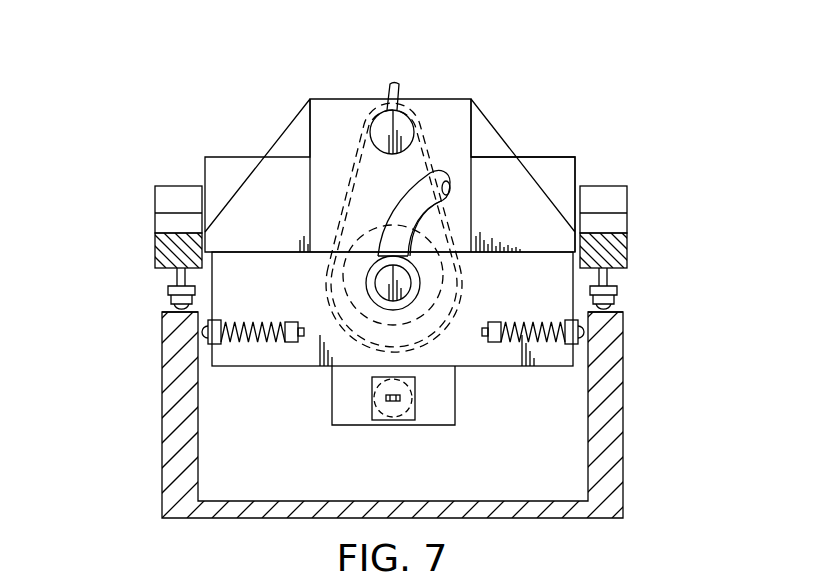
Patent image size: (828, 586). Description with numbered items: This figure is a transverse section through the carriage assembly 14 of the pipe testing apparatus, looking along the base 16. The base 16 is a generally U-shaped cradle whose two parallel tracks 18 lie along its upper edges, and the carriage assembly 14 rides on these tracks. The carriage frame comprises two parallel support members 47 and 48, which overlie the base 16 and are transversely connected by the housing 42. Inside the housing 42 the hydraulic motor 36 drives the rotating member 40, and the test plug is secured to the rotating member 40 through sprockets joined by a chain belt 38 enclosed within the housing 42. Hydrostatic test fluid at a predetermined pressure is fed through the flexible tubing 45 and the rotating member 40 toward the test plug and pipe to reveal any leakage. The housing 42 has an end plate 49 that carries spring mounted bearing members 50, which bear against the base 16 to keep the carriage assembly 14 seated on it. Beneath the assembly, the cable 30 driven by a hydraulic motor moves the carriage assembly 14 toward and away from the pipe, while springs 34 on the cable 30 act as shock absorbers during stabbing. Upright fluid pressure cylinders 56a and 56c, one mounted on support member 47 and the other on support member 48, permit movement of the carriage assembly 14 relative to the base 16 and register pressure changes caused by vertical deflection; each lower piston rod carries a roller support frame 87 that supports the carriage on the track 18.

The carriage assembly 14 is at (530, 137).
The longitudinal base 16 is at (155, 457).
The tracks 18 is at (172, 303).
The cable 30 is at (392, 445).
The springs 34 is at (416, 400).
The hydraulic motor 36 is at (383, 128).
The chain belt 38 is at (357, 203).
The rotating member 40 is at (356, 288).
The housing 42 is at (487, 128).
The flexible tubing 45 is at (404, 212).
The support member 47 is at (615, 250).
The support member 48 is at (170, 250).
The end plate 49 is at (313, 345).
The spring mounted bearing members 50 is at (210, 335).
The fluid pressure cylinder 56a is at (622, 200).
The fluid pressure cylinder 56c is at (165, 204).
The roller support frame 87 is at (168, 292).